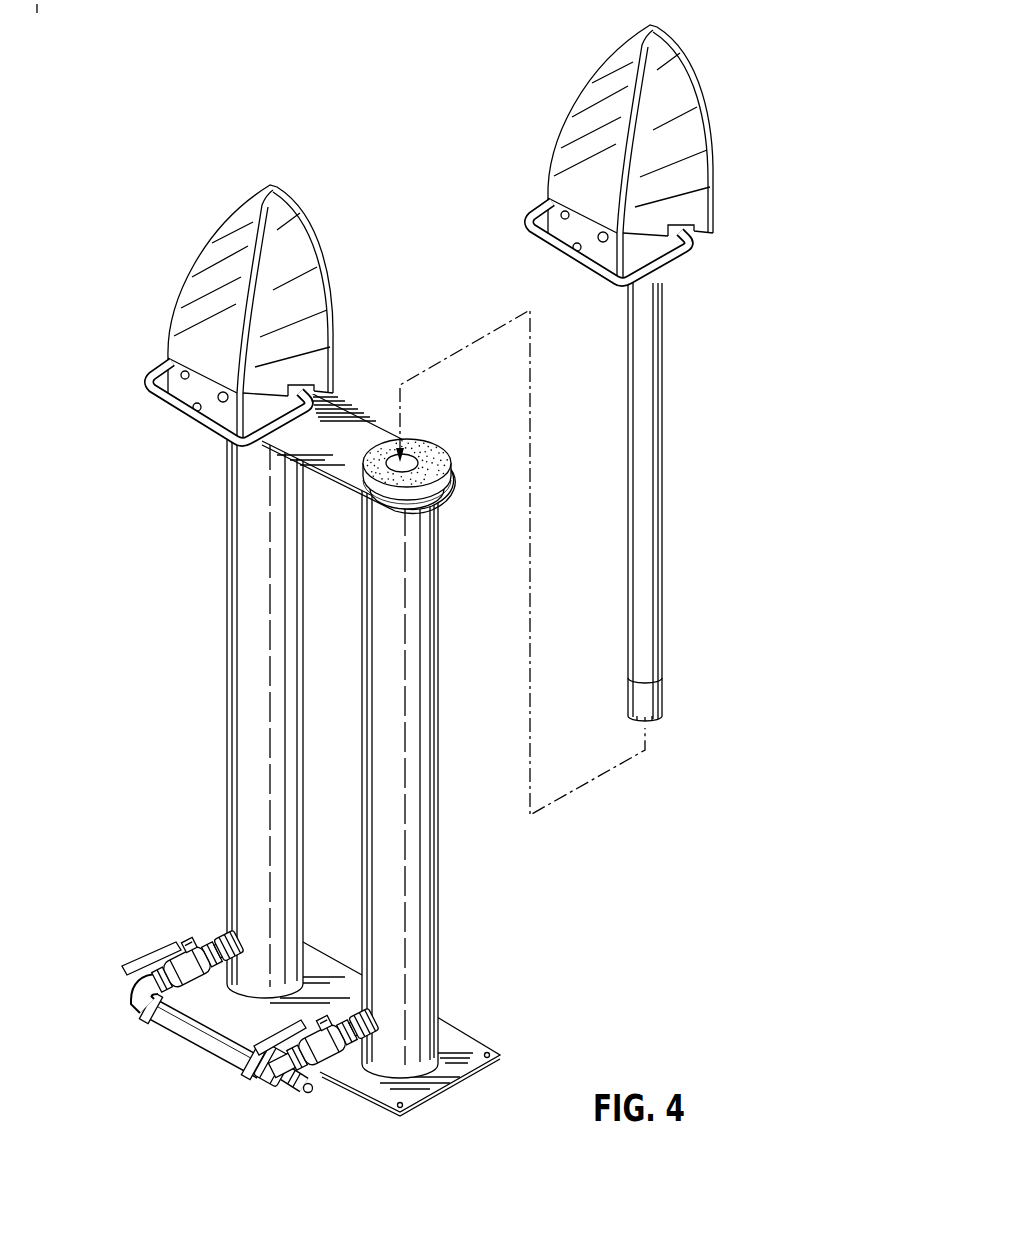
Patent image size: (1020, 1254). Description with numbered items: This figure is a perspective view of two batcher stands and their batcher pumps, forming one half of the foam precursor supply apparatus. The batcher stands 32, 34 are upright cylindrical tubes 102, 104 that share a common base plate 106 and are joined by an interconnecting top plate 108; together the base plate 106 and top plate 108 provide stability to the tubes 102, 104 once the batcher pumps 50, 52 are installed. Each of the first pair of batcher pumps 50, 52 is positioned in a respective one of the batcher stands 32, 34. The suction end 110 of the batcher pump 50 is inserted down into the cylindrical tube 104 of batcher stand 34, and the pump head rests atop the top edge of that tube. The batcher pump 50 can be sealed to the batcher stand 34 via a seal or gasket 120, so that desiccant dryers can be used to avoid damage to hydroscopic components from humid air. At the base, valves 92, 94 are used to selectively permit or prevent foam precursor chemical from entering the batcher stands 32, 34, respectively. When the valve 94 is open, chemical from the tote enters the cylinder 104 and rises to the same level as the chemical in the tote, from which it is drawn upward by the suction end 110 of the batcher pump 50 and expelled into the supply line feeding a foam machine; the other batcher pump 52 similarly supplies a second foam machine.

The batcher pump 50 is at (586, 90).
The batcher pump 52 is at (181, 277).
The interconnecting top plate 108 is at (338, 427).
The seal or gasket 120 is at (430, 450).
The batcher stand 34 is at (226, 612).
The cylindrical tube 104 is at (243, 729).
The batcher stand 32 is at (441, 752).
The cylindrical tube 102 is at (432, 884).
The suction end 110 is at (663, 697).
The common base plate 106 is at (460, 1040).
The valve 94 is at (191, 943).
The valve 92 is at (336, 1060).